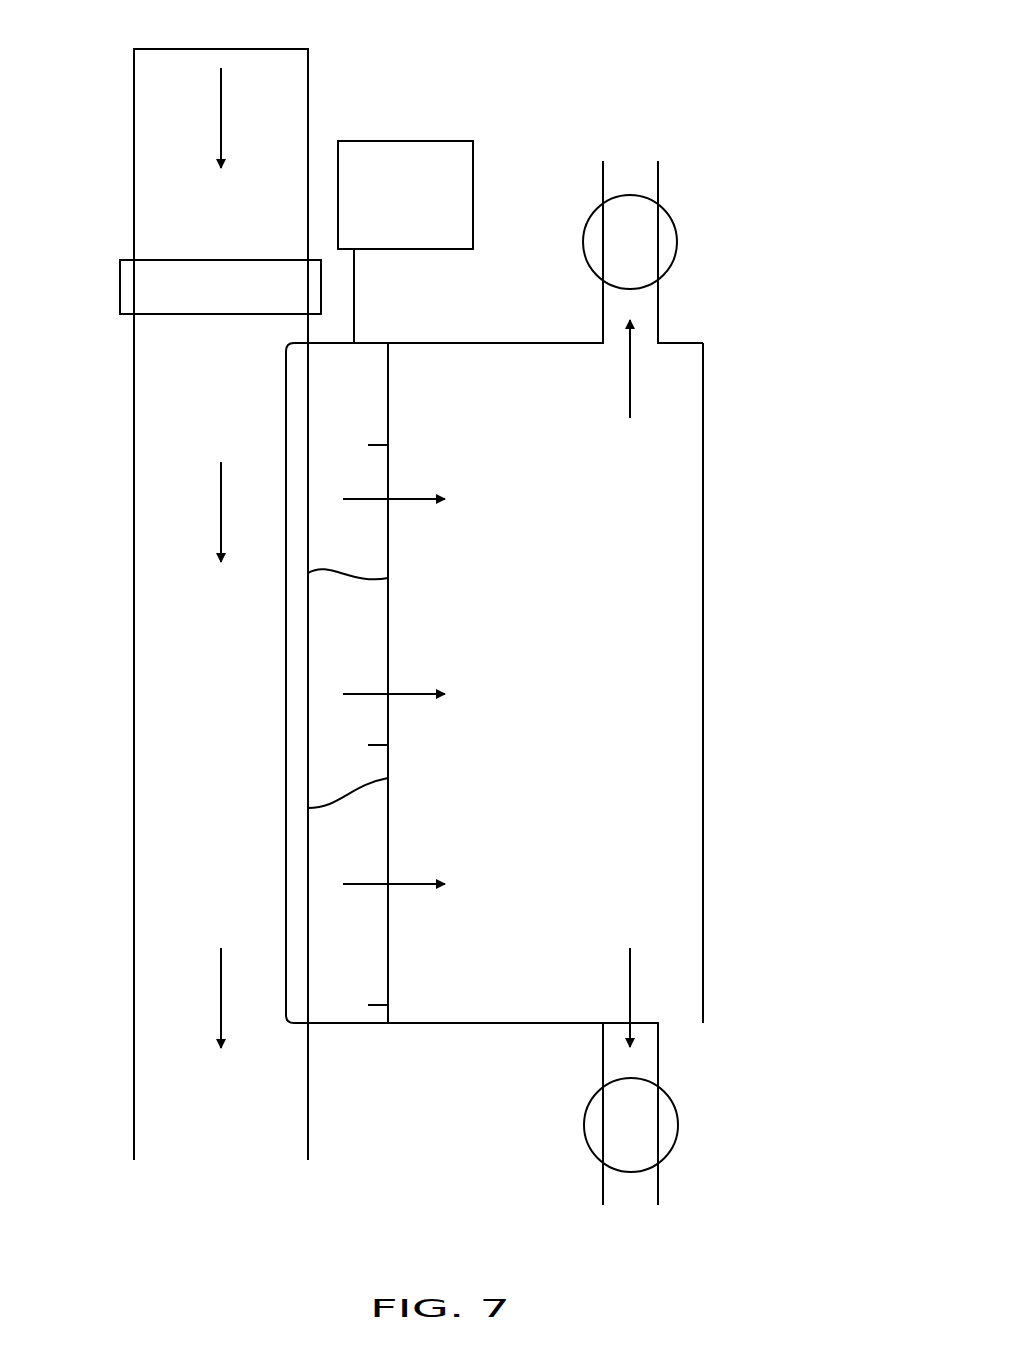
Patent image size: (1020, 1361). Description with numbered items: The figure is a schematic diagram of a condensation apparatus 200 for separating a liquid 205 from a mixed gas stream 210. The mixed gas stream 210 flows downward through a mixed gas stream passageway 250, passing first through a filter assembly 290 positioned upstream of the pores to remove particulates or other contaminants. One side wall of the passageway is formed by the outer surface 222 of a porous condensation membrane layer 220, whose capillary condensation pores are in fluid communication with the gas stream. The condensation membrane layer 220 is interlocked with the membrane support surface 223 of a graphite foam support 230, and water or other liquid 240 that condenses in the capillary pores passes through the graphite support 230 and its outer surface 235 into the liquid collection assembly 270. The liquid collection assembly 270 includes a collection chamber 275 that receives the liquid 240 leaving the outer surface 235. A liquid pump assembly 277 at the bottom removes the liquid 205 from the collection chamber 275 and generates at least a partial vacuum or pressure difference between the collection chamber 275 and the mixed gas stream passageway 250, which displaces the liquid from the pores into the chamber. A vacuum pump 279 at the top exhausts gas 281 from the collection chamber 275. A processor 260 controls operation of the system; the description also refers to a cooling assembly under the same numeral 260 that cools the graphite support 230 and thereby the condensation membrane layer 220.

The apparatus 200 is at (664, 58).
The liquid 205 is at (630, 968).
The mixed gas stream 210 is at (221, 135).
The condensation membrane layer 220 is at (294, 377).
The outer surface 222 is at (286, 778).
The membrane support surface 223 is at (388, 578).
The graphite foam support 230 is at (388, 445).
The outer surface 235 is at (388, 388).
The liquid 240 is at (405, 499).
The mixed gas stream passageway 250 is at (155, 196).
The processor 260 is at (473, 165).
The liquid collection assembly 270 is at (728, 405).
The collection chamber 275 is at (642, 652).
The liquid pump assembly 277 is at (678, 1123).
The vacuum pump 279 is at (677, 242).
The gas 281 is at (630, 393).
The filter assembly 290 is at (232, 260).